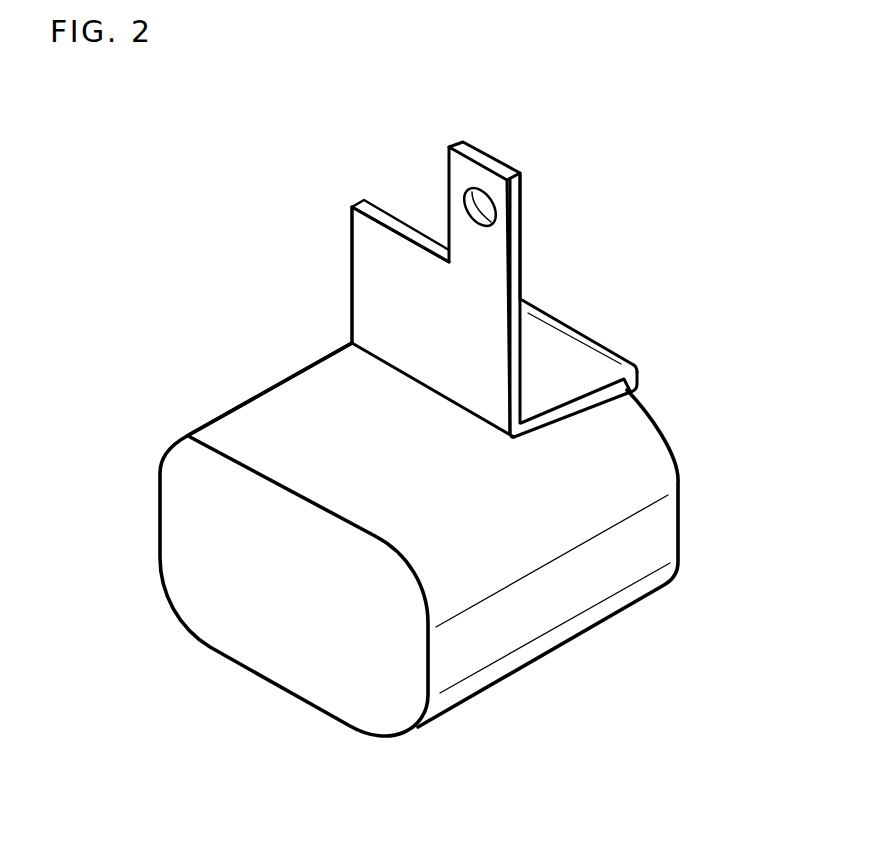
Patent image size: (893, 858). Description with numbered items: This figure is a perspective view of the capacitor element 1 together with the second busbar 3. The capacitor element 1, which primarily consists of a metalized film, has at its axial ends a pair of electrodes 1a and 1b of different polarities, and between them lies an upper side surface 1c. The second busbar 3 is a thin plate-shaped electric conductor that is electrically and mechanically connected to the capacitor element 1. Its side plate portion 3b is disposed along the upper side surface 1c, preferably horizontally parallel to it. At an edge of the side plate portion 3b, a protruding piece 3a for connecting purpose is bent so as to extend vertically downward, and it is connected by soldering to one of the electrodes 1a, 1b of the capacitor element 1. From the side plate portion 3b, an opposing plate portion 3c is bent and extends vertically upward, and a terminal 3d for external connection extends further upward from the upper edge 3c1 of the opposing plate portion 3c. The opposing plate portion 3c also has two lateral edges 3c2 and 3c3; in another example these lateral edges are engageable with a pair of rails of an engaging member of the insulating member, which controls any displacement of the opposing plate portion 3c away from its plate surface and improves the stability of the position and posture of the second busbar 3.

The capacitor element 1 is at (453, 497).
The electrode 1a is at (252, 615).
The electrode 1b is at (667, 430).
The upper side surface 1c is at (325, 408).
The second busbar 3 is at (483, 267).
The protruding piece for connecting purpose 3a is at (633, 390).
The side plate portion 3b is at (543, 343).
The opposing plate portion 3c is at (392, 270).
The upper edge 3c1 is at (404, 228).
The lateral edge 3c2 is at (352, 232).
The lateral edge 3c3 is at (517, 357).
The terminal for external connection 3d is at (483, 160).